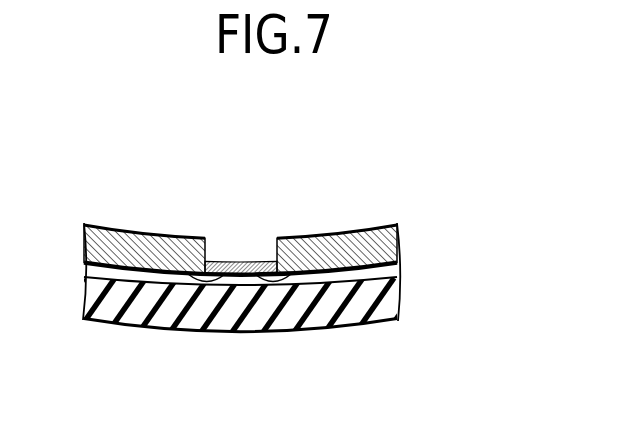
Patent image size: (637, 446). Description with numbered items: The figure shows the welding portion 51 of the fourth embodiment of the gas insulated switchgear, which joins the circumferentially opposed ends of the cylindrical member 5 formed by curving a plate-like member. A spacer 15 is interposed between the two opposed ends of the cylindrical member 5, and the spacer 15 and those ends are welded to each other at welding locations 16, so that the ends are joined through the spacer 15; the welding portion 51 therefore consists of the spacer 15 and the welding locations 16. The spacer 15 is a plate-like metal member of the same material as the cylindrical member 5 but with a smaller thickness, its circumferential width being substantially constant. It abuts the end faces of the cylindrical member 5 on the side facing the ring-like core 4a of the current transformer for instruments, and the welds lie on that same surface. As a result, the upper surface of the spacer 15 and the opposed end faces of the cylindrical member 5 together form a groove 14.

The ring-like core 4a is at (352, 312).
The cylindrical member 5 is at (130, 247).
The groove 14 is at (257, 250).
The spacer 15 is at (233, 265).
The welding locations 16 is at (191, 280).
The welding portion 51 is at (208, 212).